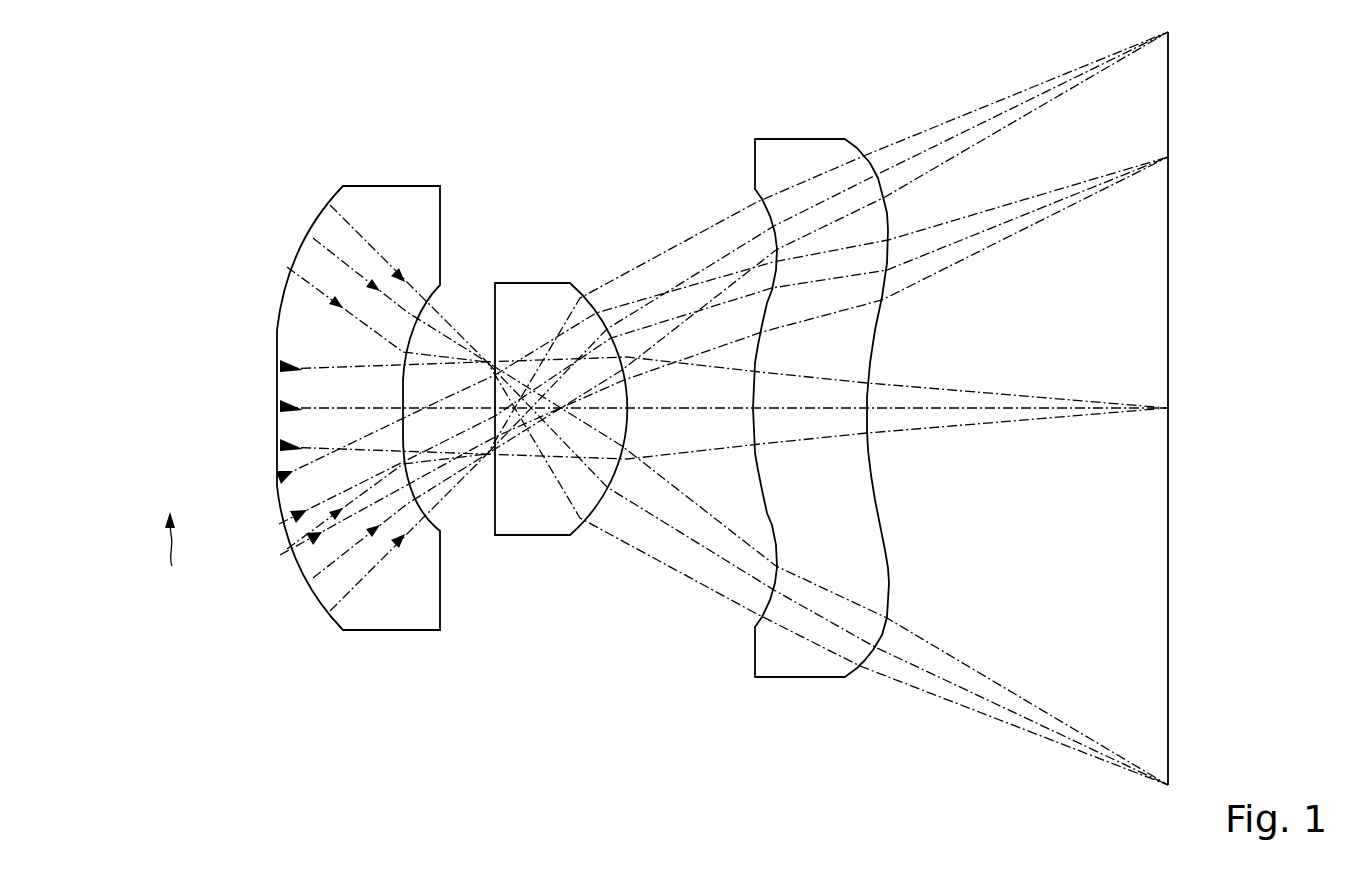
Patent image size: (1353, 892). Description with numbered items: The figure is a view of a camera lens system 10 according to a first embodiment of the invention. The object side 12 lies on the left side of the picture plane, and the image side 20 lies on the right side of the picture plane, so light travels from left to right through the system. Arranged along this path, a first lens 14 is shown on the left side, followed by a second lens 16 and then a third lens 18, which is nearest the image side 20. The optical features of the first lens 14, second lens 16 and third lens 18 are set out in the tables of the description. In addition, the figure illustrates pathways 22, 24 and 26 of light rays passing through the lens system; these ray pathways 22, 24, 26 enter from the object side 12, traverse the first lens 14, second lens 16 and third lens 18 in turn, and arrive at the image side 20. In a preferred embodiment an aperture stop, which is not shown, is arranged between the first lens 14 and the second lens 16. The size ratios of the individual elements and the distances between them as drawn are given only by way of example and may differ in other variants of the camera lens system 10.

The camera lens system 10 is at (160, 130).
The object side 12 is at (175, 559).
The first lens 14 is at (419, 632).
The second lens 16 is at (542, 541).
The third lens 18 is at (793, 688).
The image side 20 is at (1190, 468).
The pathway of light rays 22 is at (281, 440).
The pathway of light rays 24 is at (314, 544).
The pathway of light rays 26 is at (398, 255).